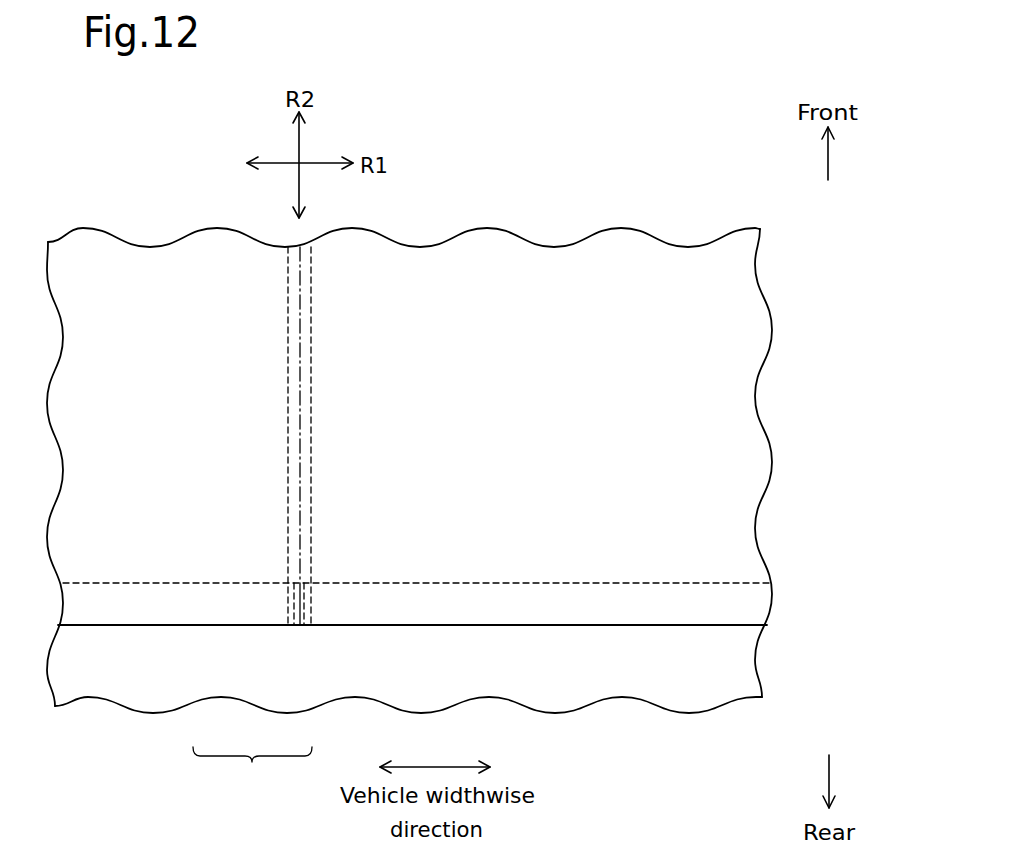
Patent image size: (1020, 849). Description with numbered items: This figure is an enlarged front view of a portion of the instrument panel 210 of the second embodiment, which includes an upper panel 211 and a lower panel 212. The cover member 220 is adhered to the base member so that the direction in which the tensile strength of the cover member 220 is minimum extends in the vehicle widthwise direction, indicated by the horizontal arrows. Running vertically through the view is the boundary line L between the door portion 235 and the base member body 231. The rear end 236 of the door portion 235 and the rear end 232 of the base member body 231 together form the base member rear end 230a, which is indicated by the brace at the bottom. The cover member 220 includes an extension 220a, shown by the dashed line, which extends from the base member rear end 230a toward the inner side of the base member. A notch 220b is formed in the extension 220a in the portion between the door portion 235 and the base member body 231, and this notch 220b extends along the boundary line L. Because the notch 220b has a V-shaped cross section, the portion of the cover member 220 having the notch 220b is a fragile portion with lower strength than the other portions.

The instrument panel 210 is at (812, 493).
The upper panel 211 is at (708, 502).
The lower panel 212 is at (708, 652).
The cover member 220 is at (413, 613).
The extension 220a is at (505, 600).
The notch 220b is at (295, 600).
The base member body 231 is at (290, 476).
The door portion 235 is at (305, 428).
The rear end of the base member body 232 is at (183, 617).
The rear end of the door portion 236 is at (348, 613).
The base member rear end 230a is at (252, 768).
The boundary line L is at (300, 340).